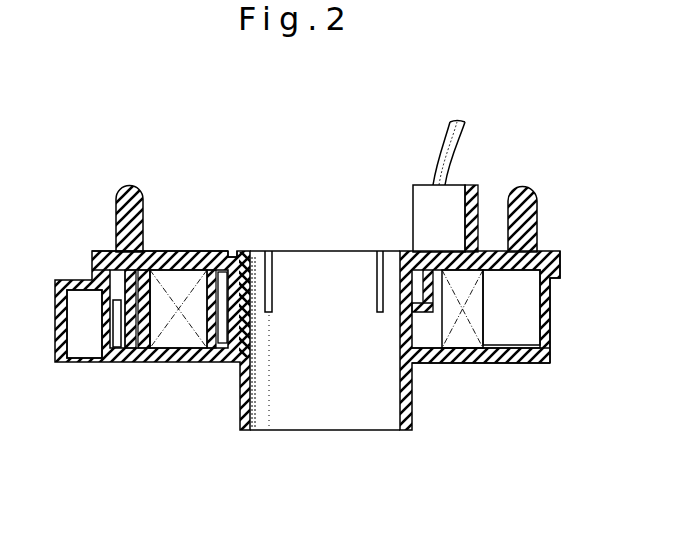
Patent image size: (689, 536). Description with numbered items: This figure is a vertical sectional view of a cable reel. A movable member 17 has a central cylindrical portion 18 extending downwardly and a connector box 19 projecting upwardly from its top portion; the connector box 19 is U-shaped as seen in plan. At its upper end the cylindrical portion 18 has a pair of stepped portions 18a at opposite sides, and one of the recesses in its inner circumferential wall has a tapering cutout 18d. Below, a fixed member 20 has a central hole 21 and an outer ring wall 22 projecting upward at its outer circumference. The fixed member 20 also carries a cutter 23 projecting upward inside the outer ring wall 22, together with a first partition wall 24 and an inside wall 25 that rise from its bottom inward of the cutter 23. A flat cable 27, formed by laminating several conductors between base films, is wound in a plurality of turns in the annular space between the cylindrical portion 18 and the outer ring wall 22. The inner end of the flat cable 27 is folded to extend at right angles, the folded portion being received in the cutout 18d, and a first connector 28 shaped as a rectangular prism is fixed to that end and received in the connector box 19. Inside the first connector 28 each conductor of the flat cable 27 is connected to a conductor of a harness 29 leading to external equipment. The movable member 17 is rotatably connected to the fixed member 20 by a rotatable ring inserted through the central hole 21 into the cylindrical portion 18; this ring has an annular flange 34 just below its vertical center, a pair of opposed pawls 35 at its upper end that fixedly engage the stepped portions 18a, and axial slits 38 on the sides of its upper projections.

The movable member 17 is at (92, 248).
The cylindrical portion 18 is at (231, 285).
The stepped portion 18a is at (232, 252).
The tapering cutout 18d is at (428, 316).
The connector box 19 is at (469, 190).
The fixed member 20 is at (539, 363).
The central hole 21 is at (441, 350).
The outer ring wall 22 is at (118, 314).
The cutter 23 is at (117, 318).
The first partition wall 24 is at (128, 266).
The inside wall 25 is at (148, 296).
The flat cable 27 is at (166, 305).
The first connector 28 is at (418, 199).
The harness 29 is at (438, 160).
The annular flange 34 is at (222, 352).
The pawl 35 is at (238, 265).
The axial slit 38 is at (268, 288).